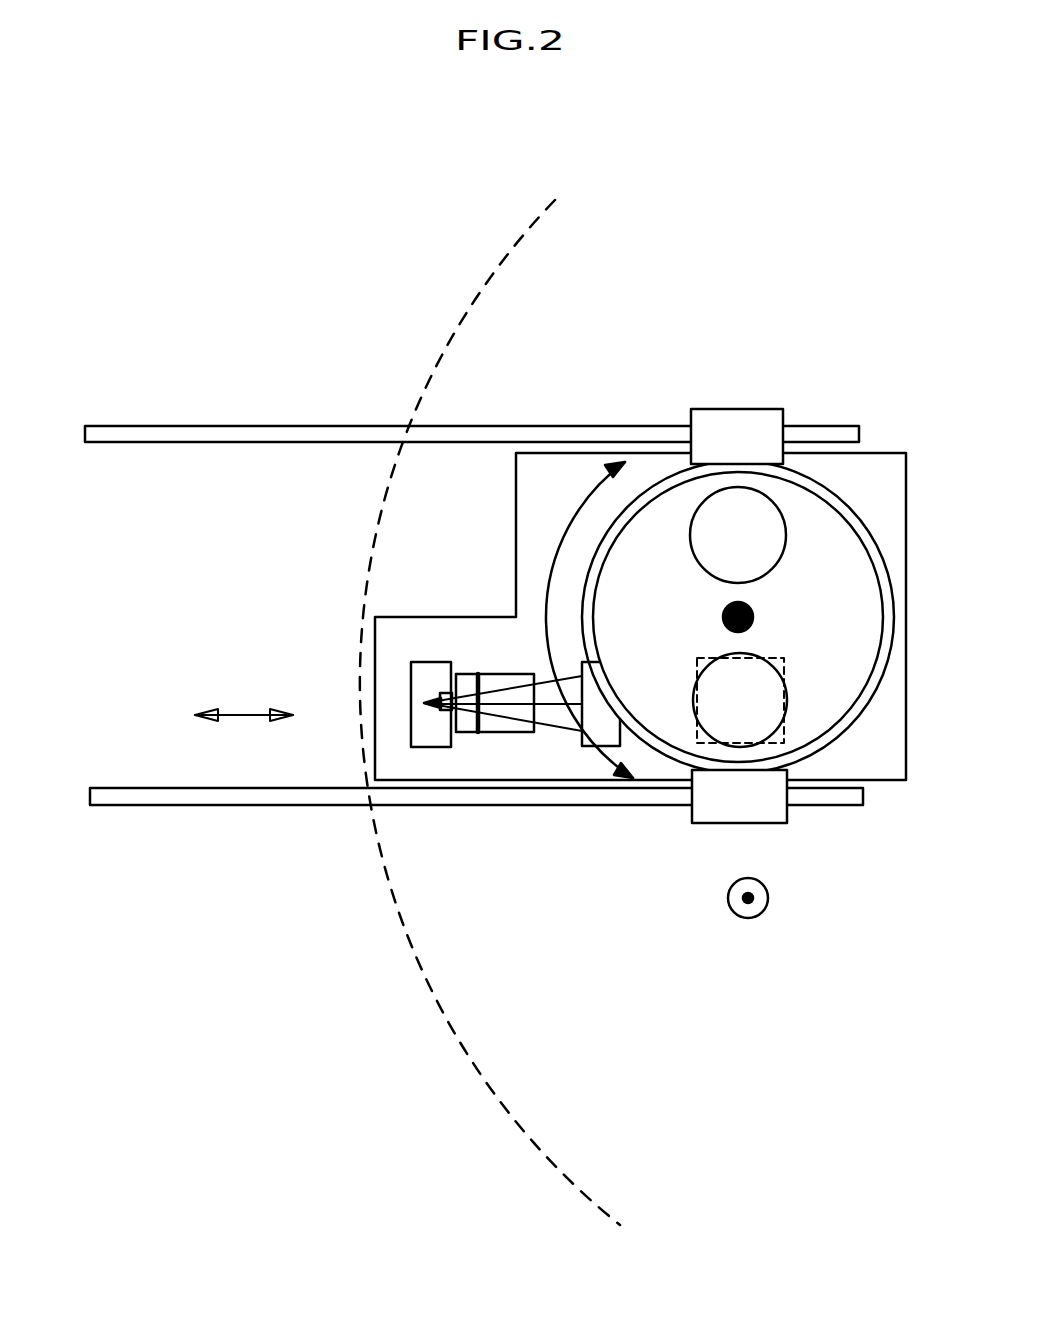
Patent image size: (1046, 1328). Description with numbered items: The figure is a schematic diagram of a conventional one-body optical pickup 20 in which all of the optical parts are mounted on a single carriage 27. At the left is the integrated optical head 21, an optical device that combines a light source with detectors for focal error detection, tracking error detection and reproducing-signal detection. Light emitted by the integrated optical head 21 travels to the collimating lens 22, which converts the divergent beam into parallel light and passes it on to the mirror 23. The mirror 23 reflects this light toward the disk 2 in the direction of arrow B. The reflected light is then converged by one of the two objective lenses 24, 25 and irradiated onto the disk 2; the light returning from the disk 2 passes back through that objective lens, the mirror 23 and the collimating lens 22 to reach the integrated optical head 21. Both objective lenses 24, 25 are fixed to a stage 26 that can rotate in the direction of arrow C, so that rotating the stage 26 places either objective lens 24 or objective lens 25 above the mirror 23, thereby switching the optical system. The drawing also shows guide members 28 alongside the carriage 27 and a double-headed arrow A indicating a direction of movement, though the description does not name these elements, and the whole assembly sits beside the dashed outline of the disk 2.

The disk 2 is at (400, 935).
The one-body optical pickup 20 is at (905, 440).
The integrated optical head 21 is at (477, 733).
The collimating lens 22 is at (597, 769).
The mirror 23 is at (783, 658).
The objective lens 24 is at (782, 735).
The objective lens 25 is at (702, 500).
The stage 26 is at (618, 513).
The carriage 27 is at (843, 453).
The guide rails 28 is at (498, 424).
The movement direction A is at (244, 699).
The direction of arrow B is at (748, 918).
The direction of arrow C is at (589, 620).